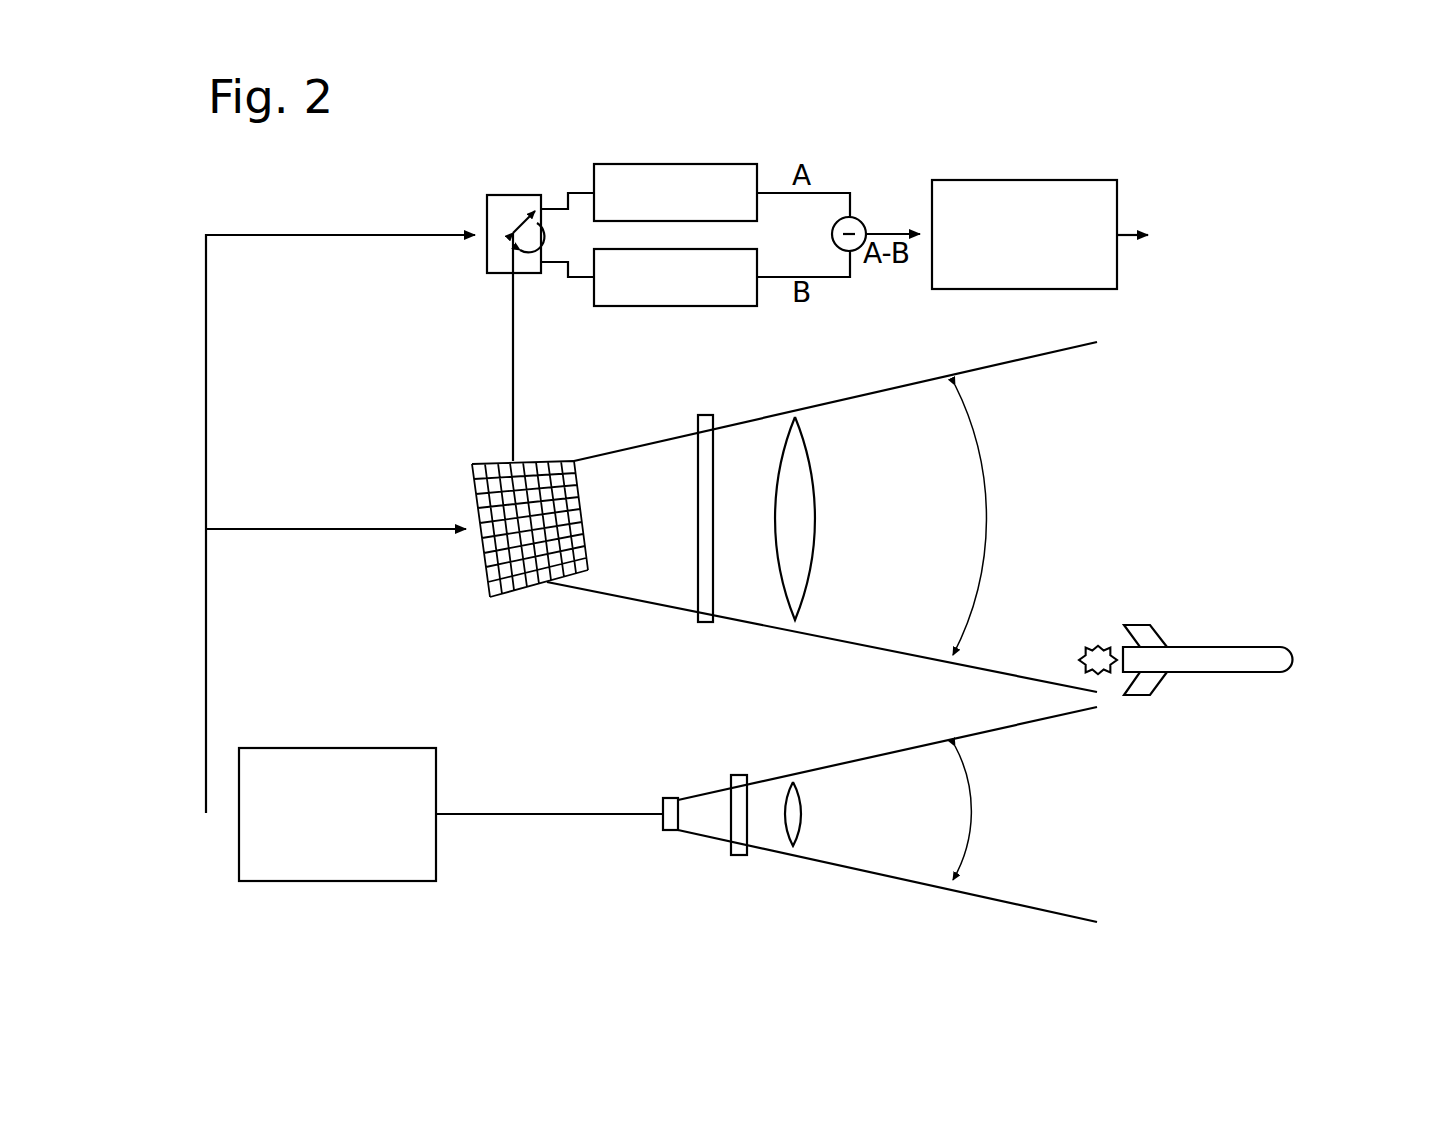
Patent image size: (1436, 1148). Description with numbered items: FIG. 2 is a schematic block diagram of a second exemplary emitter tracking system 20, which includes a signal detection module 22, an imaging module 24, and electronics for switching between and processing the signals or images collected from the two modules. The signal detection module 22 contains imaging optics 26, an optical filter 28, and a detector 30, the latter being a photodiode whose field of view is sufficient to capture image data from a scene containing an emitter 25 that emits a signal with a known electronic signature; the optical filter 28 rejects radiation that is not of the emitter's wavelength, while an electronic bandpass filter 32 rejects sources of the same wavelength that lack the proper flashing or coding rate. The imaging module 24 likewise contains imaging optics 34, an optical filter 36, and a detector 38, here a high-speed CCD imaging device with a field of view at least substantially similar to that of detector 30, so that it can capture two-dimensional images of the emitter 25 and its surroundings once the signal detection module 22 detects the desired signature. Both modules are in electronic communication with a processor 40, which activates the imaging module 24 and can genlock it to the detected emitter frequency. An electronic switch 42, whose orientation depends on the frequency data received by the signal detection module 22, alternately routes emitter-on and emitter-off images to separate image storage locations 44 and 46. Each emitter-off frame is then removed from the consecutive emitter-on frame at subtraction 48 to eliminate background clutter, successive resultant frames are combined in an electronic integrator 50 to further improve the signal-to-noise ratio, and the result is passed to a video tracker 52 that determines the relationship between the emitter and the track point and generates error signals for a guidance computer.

The emitter tracking system 20 is at (1350, 115).
The signal detection module 22 is at (883, 814).
The imaging module 24 is at (792, 517).
The emitter 25 is at (1098, 633).
The imaging optics 26 is at (802, 813).
The optical filter 28 is at (747, 775).
The detector 30 is at (673, 798).
The electronic bandpass filter 32 is at (337, 814).
The imaging optics 34 is at (816, 522).
The optical filter 36 is at (713, 415).
The detector 38 is at (488, 463).
The processor 40 is at (530, 312).
The electronic switch 42 is at (531, 265).
The image storage location 44 is at (675, 192).
The image storage location 46 is at (675, 277).
The subtraction 48 is at (862, 220).
The electronic integrator 50 is at (1024, 234).
The video tracker 52 is at (1250, 196).